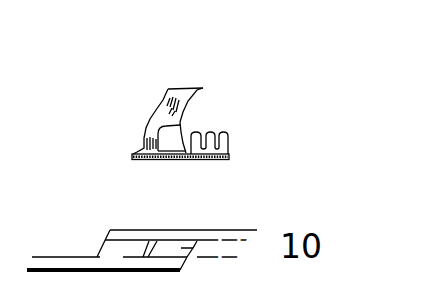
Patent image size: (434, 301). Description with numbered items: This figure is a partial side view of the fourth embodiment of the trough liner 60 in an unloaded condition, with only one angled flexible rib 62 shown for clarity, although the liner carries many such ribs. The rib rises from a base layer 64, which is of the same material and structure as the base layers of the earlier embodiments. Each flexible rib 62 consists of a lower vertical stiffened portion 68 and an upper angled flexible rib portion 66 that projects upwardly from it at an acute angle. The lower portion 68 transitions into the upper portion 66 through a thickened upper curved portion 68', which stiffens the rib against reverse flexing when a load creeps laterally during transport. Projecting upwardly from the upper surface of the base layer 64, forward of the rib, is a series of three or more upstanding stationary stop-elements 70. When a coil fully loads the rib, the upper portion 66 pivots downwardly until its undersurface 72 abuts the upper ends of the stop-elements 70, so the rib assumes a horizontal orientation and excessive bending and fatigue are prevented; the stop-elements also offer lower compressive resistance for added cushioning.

The trough liner 60 is at (170, 74).
The flexible rib 62 is at (165, 99).
The base layer 64 is at (157, 160).
The upper angled flexible rib portion 66 is at (203, 91).
The lower vertical stiffened portion 68 is at (117, 144).
The thickened upper curved portion 68' is at (111, 120).
The stop-elements 70 is at (198, 131).
The undersurface 72 is at (194, 160).